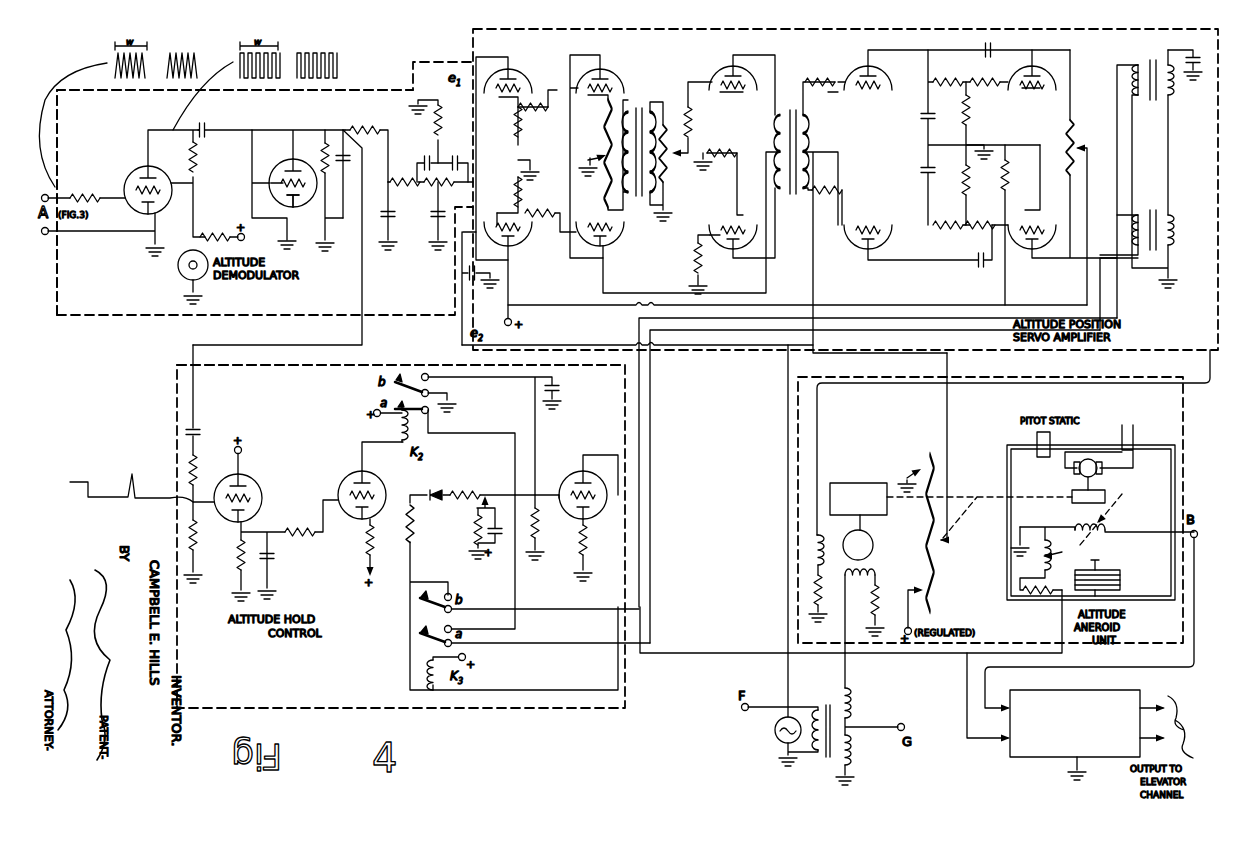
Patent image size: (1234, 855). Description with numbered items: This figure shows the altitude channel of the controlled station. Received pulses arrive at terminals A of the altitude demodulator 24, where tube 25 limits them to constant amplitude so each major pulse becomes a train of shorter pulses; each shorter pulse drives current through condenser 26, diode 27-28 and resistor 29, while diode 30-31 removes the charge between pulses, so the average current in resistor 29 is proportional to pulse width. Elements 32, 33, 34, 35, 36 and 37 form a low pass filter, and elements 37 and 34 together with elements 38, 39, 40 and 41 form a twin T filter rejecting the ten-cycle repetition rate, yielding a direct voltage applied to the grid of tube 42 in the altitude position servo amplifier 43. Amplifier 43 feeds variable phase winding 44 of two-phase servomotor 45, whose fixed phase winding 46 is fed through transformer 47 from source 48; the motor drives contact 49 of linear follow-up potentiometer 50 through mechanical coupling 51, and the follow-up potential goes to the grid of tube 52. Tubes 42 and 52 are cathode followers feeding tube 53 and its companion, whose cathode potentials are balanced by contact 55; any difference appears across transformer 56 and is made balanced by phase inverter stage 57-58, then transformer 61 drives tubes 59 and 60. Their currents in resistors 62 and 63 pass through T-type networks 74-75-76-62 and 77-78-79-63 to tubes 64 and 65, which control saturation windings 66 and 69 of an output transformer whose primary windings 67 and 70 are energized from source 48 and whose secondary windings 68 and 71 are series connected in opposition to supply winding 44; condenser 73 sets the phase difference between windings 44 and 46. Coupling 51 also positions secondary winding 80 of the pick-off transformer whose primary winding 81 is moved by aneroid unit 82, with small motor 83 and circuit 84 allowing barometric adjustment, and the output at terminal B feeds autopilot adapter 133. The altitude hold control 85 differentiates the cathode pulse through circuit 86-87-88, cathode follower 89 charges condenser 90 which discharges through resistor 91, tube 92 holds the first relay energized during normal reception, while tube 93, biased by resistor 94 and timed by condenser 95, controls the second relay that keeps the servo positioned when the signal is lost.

The altitude demodulator 24 is at (92, 322).
The tube 25 is at (136, 170).
The condenser 26 is at (208, 124).
The diode 27 is at (300, 205).
The cathode 28 is at (300, 166).
The resistor 29 is at (328, 140).
The diode 30 is at (282, 202).
The diode 31 is at (275, 175).
The low pass filter element 32 is at (350, 164).
The low pass filter element 33 is at (394, 216).
The filter element 34 is at (432, 206).
The low pass filter element 35 is at (366, 124).
The low pass filter element 36 is at (417, 158).
The filter element 37 is at (400, 191).
The twin T filter element 38 is at (428, 150).
The twin T filter element 39 is at (455, 152).
The twin T filter element 40 is at (443, 122).
The twin T filter element 41 is at (448, 190).
The tube 42 is at (520, 73).
The altitude position servo amplifier 43 is at (463, 348).
The variable phase winding 44 is at (812, 552).
The two-phase servomotor 45 is at (873, 535).
The fixed phase winding 46 is at (877, 572).
The transformer 47 is at (822, 690).
The source 48 is at (772, 740).
The contact 49 is at (944, 555).
The linear follow-up potentiometer 50 is at (914, 545).
The mechanical coupling 51 is at (987, 498).
The tube 52 is at (520, 244).
The tube 53 is at (614, 72).
The contact 55 is at (596, 147).
The transformer 56 is at (640, 112).
The tube 57 is at (712, 72).
The tube 58 is at (706, 255).
The tube 59 is at (875, 66).
The tube 60 is at (846, 248).
The transformer 61 is at (790, 110).
The resistor 62 is at (972, 112).
The resistor 63 is at (960, 182).
The tube 64 is at (1022, 66).
The tube 65 is at (1014, 247).
The winding 66 is at (1160, 52).
The primary winding 67 is at (1136, 62).
The secondary winding 68 is at (1172, 100).
The winding 69 is at (1162, 210).
The primary winding 70 is at (1130, 230).
The secondary winding 71 is at (1174, 250).
The condenser 73 is at (1196, 50).
The T-network element 74 is at (992, 44).
The T-network element 75 is at (945, 76).
The T-network element 76 is at (981, 71).
The T-network element 77 is at (975, 266).
The T-network element 78 is at (948, 232).
The T-network element 79 is at (982, 232).
The secondary winding 80 is at (1108, 526).
The primary winding 81 is at (1050, 563).
The aneroid unit 82 is at (1122, 578).
The small motor 83 is at (1098, 478).
The circuit 84 is at (1140, 425).
The altitude hold control 85 is at (360, 360).
The differentiating circuit element 86 is at (202, 422).
The differentiating circuit element 87 is at (200, 462).
The differentiating circuit element 88 is at (200, 532).
The cathode follower 89 is at (258, 484).
The condenser 90 is at (273, 552).
The resistor 91 is at (232, 556).
The tube 92 is at (344, 478).
The tube 93 is at (565, 476).
The resistor 94 is at (578, 538).
The condenser 95 is at (560, 385).
The autopilot adapter 133 is at (1082, 688).